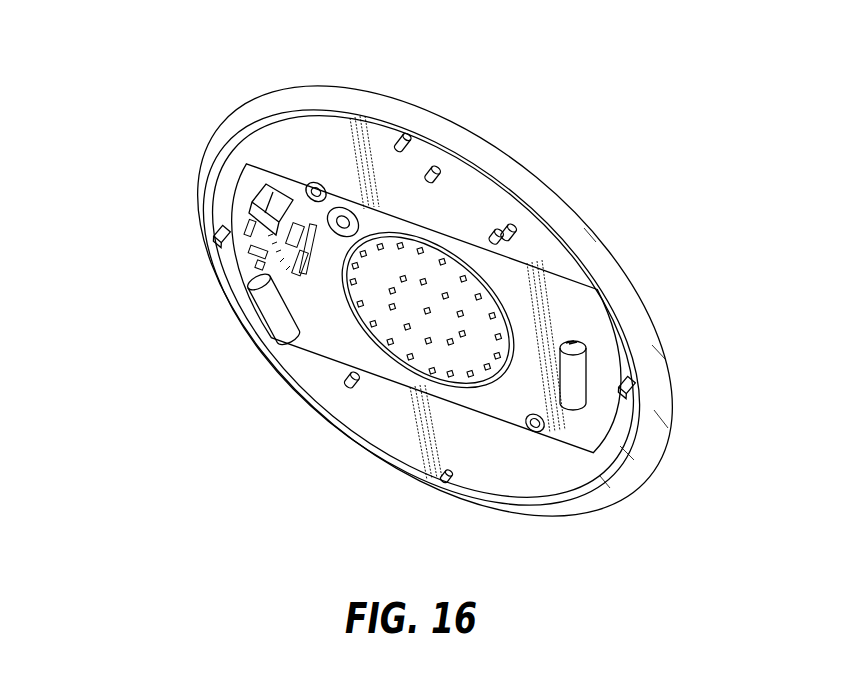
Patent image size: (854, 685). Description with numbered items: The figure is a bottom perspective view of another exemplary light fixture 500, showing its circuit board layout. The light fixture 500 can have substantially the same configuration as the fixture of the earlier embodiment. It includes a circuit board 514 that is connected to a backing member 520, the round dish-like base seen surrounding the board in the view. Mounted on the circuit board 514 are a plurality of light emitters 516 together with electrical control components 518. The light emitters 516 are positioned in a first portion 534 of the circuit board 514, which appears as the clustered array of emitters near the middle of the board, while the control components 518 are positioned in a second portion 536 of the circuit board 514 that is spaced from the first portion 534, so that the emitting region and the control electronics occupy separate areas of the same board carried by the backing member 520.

The light fixture 500 is at (147, 150).
The circuit board 514 is at (563, 299).
The light emitters 516 is at (468, 333).
The electrical control components 518 is at (240, 294).
The backing member 520 is at (465, 187).
The first portion 534 is at (377, 338).
The second portion 536 is at (292, 194).